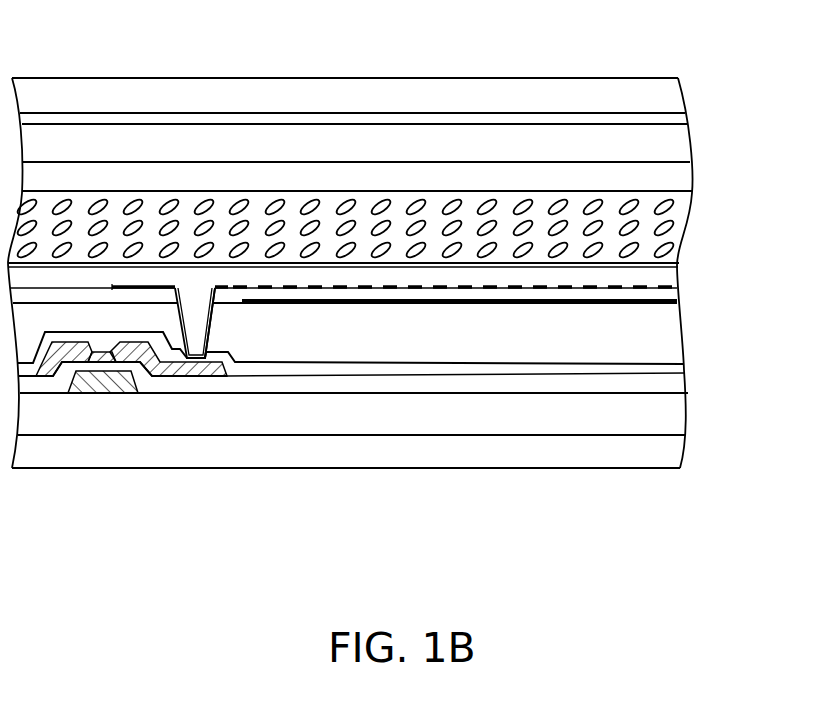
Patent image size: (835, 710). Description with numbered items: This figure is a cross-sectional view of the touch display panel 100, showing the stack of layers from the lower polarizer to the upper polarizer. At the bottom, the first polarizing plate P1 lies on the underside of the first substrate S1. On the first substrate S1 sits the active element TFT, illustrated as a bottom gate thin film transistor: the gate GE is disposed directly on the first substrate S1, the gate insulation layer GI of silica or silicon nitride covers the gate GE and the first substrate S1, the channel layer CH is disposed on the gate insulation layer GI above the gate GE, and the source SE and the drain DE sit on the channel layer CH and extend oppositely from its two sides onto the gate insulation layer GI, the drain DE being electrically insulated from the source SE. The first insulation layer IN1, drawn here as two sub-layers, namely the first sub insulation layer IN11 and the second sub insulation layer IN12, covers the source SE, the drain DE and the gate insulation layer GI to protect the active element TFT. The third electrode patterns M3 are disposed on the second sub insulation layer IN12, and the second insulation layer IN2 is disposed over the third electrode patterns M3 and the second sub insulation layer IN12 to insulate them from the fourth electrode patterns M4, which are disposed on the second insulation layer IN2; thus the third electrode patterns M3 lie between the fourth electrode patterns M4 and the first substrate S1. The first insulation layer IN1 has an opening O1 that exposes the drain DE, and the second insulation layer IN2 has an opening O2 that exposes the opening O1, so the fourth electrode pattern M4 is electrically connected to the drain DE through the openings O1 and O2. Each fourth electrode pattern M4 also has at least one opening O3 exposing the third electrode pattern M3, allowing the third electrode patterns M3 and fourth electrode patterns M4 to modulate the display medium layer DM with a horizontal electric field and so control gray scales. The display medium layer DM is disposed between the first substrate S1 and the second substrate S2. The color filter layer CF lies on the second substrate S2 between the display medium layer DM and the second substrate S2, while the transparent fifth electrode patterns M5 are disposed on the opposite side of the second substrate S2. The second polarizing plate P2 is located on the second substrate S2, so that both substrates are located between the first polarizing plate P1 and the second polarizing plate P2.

The second polarizing plate P2 is at (677, 100).
The fifth electrode patterns M5 is at (680, 122).
The second substrate S2 is at (682, 148).
The color filter layer CF is at (683, 180).
The display medium layer DM is at (682, 223).
The opening O3 is at (662, 277).
The fourth electrode patterns M4 is at (673, 290).
The second insulation layer IN2 is at (672, 297).
The third electrode patterns M3 is at (677, 305).
The second sub insulation layer IN12 is at (662, 343).
The first sub insulation layer IN11 is at (670, 369).
The first insulation layer IN1 is at (763, 335).
The first substrate S1 is at (677, 417).
The first polarizing plate P1 is at (677, 453).
The opening O1 is at (203, 330).
The opening O2 is at (210, 288).
The source SE is at (50, 369).
The channel layer CH is at (90, 357).
The gate GE is at (118, 385).
The gate insulation layer GI is at (162, 385).
The drain DE is at (192, 367).
The active element TFT is at (237, 519).
The touch display panel 100 is at (685, 562).